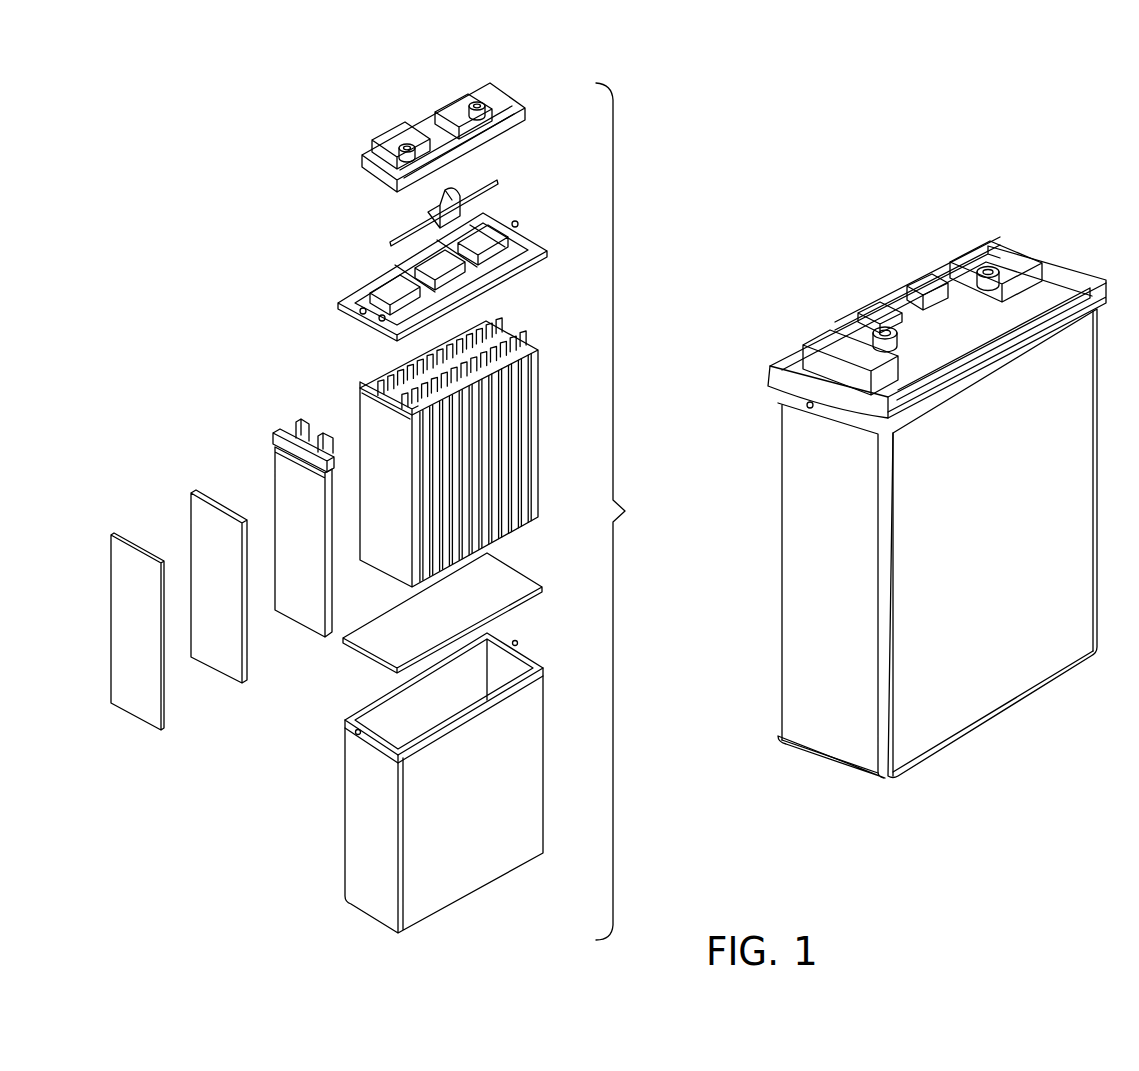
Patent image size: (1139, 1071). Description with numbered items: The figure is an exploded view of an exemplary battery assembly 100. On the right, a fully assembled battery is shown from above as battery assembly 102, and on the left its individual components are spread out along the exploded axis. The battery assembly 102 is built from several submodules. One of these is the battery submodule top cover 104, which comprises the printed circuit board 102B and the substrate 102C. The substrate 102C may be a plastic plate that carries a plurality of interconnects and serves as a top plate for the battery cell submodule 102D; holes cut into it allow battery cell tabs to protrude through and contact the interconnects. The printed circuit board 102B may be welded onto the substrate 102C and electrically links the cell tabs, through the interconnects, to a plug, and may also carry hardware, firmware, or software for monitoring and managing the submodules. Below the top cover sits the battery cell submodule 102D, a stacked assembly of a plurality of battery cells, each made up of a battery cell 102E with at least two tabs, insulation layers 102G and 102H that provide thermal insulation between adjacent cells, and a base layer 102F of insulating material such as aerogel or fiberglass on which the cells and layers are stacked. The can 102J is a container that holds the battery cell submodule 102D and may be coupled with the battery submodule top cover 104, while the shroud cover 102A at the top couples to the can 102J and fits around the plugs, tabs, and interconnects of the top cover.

The battery assembly 100 is at (1028, 134).
The battery assembly 102 is at (925, 268).
The battery submodule top cover 104 is at (232, 157).
The shroud cover 102A is at (412, 118).
The printed circuit board 102B is at (388, 231).
The substrate 102C is at (347, 281).
The battery cell submodule 102D is at (362, 369).
The battery cell 102E is at (295, 409).
The base layer 102F is at (373, 657).
The insulation layer 102G is at (232, 687).
The insulation layer 102H is at (125, 718).
The can 102J is at (463, 897).